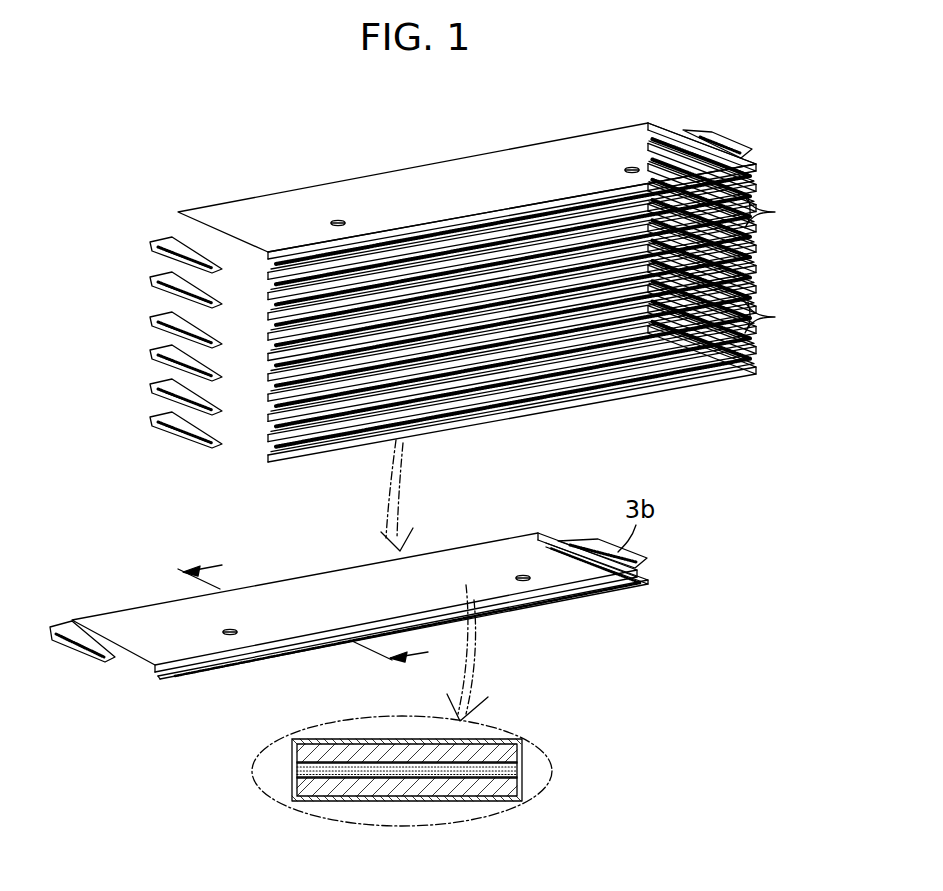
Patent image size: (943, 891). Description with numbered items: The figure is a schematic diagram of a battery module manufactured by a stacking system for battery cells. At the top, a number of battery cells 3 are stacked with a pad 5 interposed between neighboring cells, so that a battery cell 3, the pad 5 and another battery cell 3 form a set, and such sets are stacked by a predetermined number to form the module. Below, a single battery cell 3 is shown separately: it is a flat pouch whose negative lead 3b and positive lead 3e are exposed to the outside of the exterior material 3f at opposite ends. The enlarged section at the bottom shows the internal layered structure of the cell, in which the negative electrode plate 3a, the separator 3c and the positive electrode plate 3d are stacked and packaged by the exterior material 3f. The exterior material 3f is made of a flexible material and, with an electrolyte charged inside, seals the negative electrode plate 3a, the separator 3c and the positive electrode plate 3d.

The battery cell 3 is at (128, 590).
The negative electrode plate 3a is at (345, 754).
The negative lead 3b is at (729, 146).
The separator 3c is at (387, 770).
The positive electrode plate 3d is at (438, 790).
The positive lead 3e is at (165, 245).
The exterior material 3f is at (480, 803).
The pad 5 is at (771, 265).